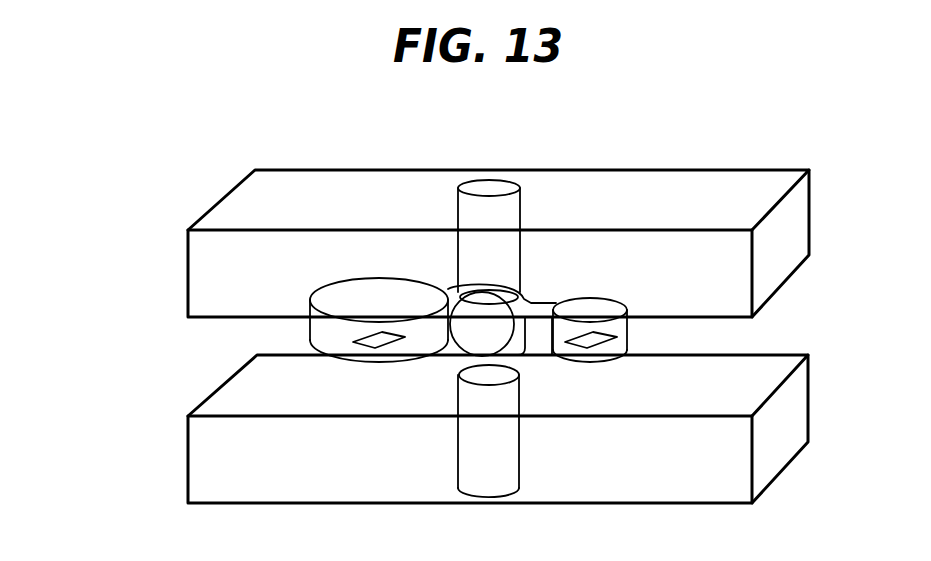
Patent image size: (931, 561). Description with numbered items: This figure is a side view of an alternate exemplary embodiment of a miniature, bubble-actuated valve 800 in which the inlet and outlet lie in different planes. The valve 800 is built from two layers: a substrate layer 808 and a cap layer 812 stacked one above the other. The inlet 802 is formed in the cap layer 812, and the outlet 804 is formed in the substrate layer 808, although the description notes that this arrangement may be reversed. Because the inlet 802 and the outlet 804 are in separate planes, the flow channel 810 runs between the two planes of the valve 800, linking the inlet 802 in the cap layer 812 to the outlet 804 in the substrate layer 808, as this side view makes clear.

The bubble-actuated valve 800 is at (277, 124).
The inlet 802 is at (485, 178).
The outlet 804 is at (490, 500).
The substrate layer 808 is at (188, 468).
The flow channel 810 is at (495, 400).
The cap layer 812 is at (188, 270).